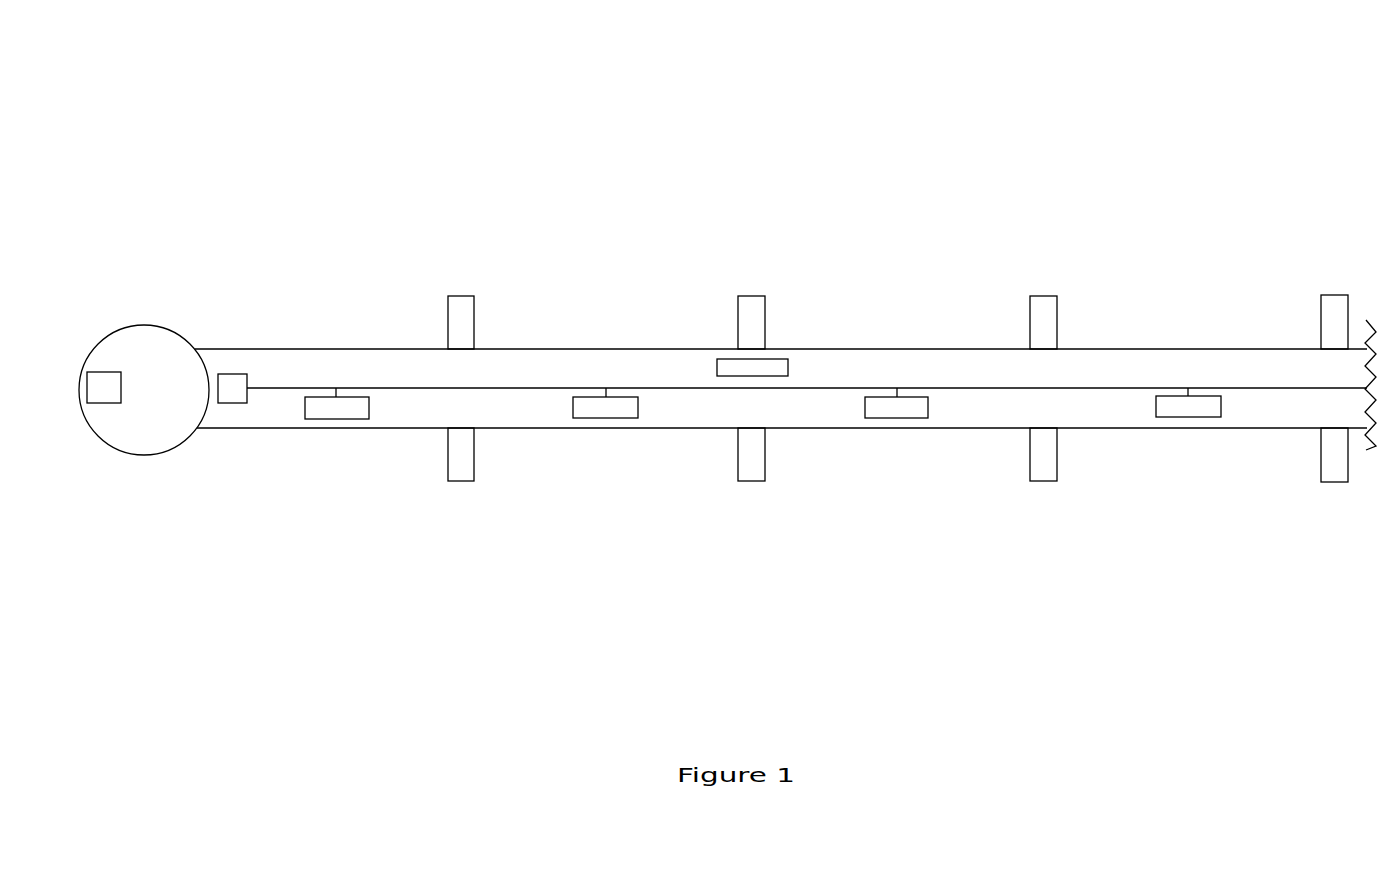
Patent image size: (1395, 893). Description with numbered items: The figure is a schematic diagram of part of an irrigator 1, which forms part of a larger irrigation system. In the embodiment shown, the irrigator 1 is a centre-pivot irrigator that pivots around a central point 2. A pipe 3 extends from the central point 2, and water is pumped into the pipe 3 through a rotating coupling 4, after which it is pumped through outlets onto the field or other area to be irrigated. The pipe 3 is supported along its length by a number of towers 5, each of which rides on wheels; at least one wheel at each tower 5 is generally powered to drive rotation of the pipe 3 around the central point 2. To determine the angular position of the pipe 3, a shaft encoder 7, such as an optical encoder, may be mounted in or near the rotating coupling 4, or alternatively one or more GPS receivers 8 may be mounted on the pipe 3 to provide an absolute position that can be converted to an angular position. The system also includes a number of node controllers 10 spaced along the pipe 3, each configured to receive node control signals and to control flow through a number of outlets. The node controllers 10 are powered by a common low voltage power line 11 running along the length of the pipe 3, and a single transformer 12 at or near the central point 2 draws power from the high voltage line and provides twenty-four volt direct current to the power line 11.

The irrigator 1 is at (862, 175).
The central point 2 is at (144, 388).
The pipe 3 is at (525, 428).
The rotating coupling 4 is at (170, 452).
The towers 5 is at (475, 312).
The shaft encoder 7 is at (105, 390).
The GPS receiver 8 is at (789, 359).
The node controllers 10 is at (341, 419).
The low voltage power line 11 is at (410, 388).
The transformer 12 is at (237, 374).